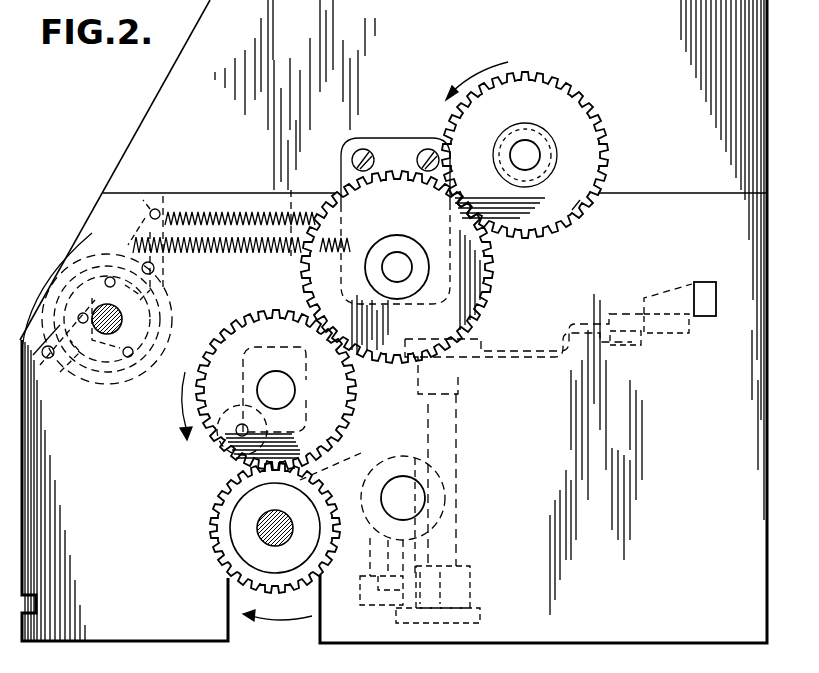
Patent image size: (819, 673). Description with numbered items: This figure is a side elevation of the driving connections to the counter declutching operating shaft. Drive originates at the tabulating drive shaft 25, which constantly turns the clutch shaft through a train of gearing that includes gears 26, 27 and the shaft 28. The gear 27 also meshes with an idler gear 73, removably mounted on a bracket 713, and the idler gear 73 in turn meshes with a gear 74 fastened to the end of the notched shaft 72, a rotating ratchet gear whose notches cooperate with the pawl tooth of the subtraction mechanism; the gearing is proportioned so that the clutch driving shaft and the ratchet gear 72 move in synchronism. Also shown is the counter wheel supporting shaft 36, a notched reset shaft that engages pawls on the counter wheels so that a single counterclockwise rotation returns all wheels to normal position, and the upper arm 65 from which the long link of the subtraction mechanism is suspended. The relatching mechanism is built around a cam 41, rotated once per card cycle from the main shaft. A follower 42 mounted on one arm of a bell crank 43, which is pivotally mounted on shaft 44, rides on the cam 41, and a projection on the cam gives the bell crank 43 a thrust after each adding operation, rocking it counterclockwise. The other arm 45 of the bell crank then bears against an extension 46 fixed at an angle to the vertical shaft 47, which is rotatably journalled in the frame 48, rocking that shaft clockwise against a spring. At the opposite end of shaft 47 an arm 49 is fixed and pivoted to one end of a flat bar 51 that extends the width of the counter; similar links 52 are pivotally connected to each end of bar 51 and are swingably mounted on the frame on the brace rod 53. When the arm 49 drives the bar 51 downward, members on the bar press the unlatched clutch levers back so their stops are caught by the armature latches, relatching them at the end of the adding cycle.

The bracket 713 is at (371, 143).
The notched shaft 72 is at (545, 148).
The gear 74 is at (578, 206).
The idler gear 73 is at (486, 297).
The counter wheel supporting shaft 36 is at (98, 307).
The shaft 28 is at (268, 378).
The cam 41 is at (296, 386).
The bell crank 43 is at (362, 455).
The gear 27 is at (216, 404).
The follower 42 is at (236, 458).
The gear 26 is at (214, 541).
The tabulating drive shaft 25 is at (268, 536).
The shaft 44 is at (396, 506).
The arm 45 is at (376, 610).
The extension 46 is at (446, 612).
The vertical shaft 47 is at (458, 546).
The frame 48 is at (482, 614).
The arm 49 is at (540, 358).
The flat bar 51 is at (628, 343).
The links 52 is at (670, 316).
The brace rod 53 is at (691, 282).
The upper arm 65 is at (274, 657).